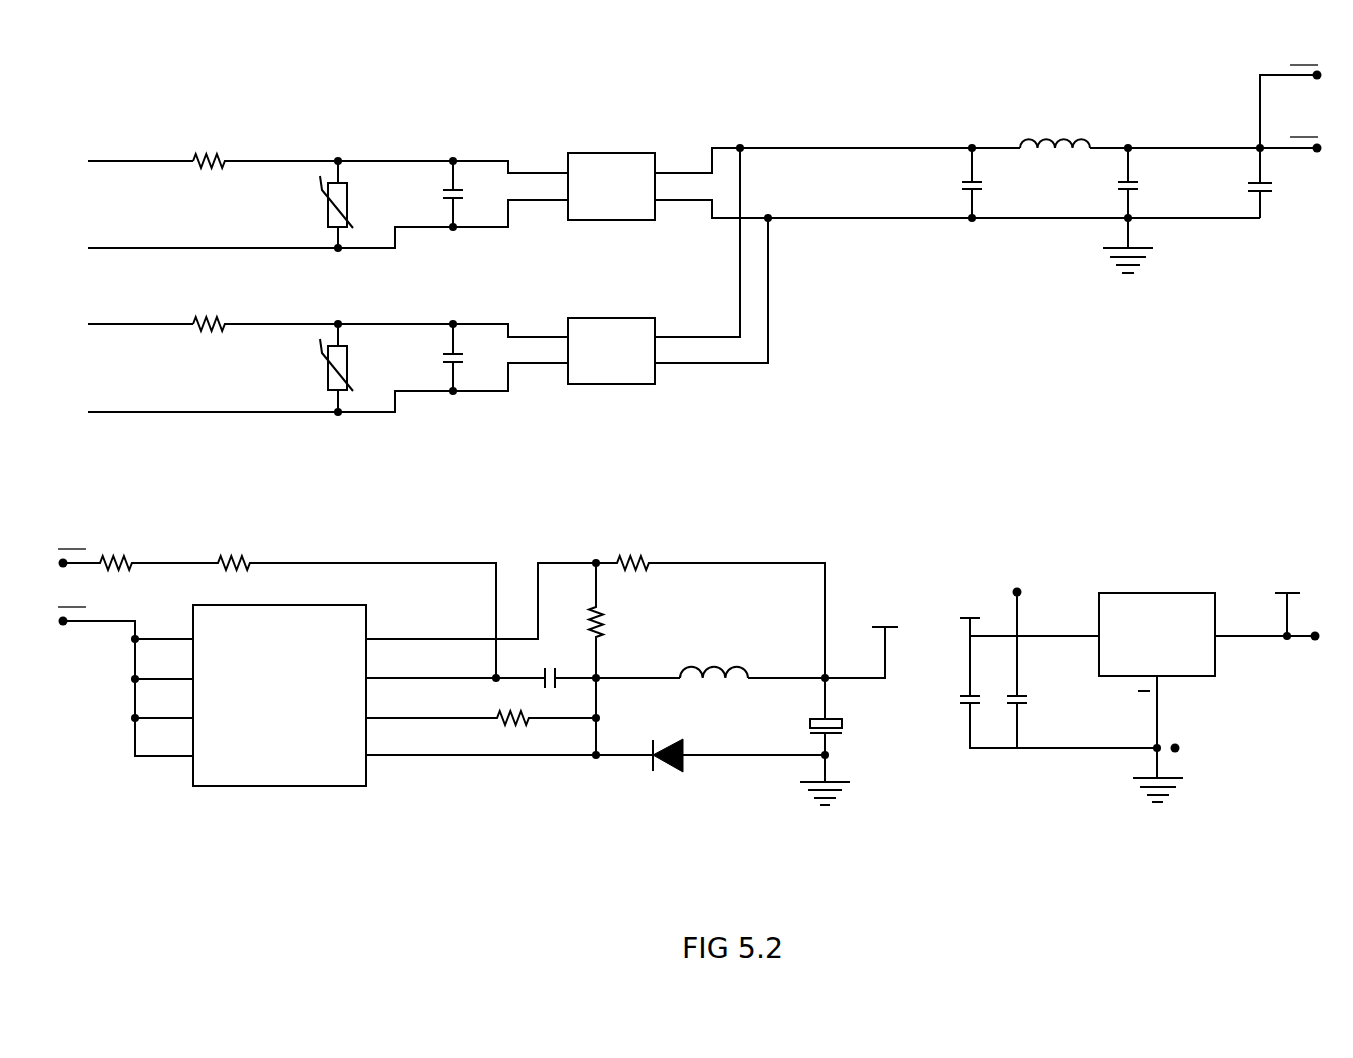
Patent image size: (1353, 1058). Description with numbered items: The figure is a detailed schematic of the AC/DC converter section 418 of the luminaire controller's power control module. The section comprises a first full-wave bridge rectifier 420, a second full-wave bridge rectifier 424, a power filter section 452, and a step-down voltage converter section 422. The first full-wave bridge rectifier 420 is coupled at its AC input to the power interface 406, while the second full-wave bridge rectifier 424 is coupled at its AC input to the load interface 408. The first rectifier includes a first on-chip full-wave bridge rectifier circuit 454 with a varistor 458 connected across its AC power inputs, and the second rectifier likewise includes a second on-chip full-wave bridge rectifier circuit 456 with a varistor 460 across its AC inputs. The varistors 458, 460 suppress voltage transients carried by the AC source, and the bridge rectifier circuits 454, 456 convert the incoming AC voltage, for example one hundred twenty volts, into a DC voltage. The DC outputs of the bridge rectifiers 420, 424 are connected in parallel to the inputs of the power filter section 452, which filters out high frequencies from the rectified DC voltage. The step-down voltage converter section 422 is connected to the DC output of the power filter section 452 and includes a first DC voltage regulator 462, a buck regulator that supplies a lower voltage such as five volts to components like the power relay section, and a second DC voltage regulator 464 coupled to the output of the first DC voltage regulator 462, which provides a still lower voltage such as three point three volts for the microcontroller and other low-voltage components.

The power interface 406 is at (213, 204).
The load interface 408 is at (213, 368).
The AC/DC converter section 418 is at (810, 477).
The first full-wave bridge rectifier 420 is at (332, 289).
The step-down voltage converter section 422 is at (808, 877).
The second full-wave bridge rectifier 424 is at (332, 456).
The power filter section 452 is at (1006, 275).
The first on-chip full-wave bridge rectifier circuit 454 is at (583, 153).
The second on-chip full-wave bridge rectifier circuit 456 is at (583, 318).
The varistor 458 is at (318, 204).
The varistor 460 is at (318, 368).
The first DC voltage regulator 462 is at (531, 820).
The second DC voltage regulator 464 is at (1076, 836).